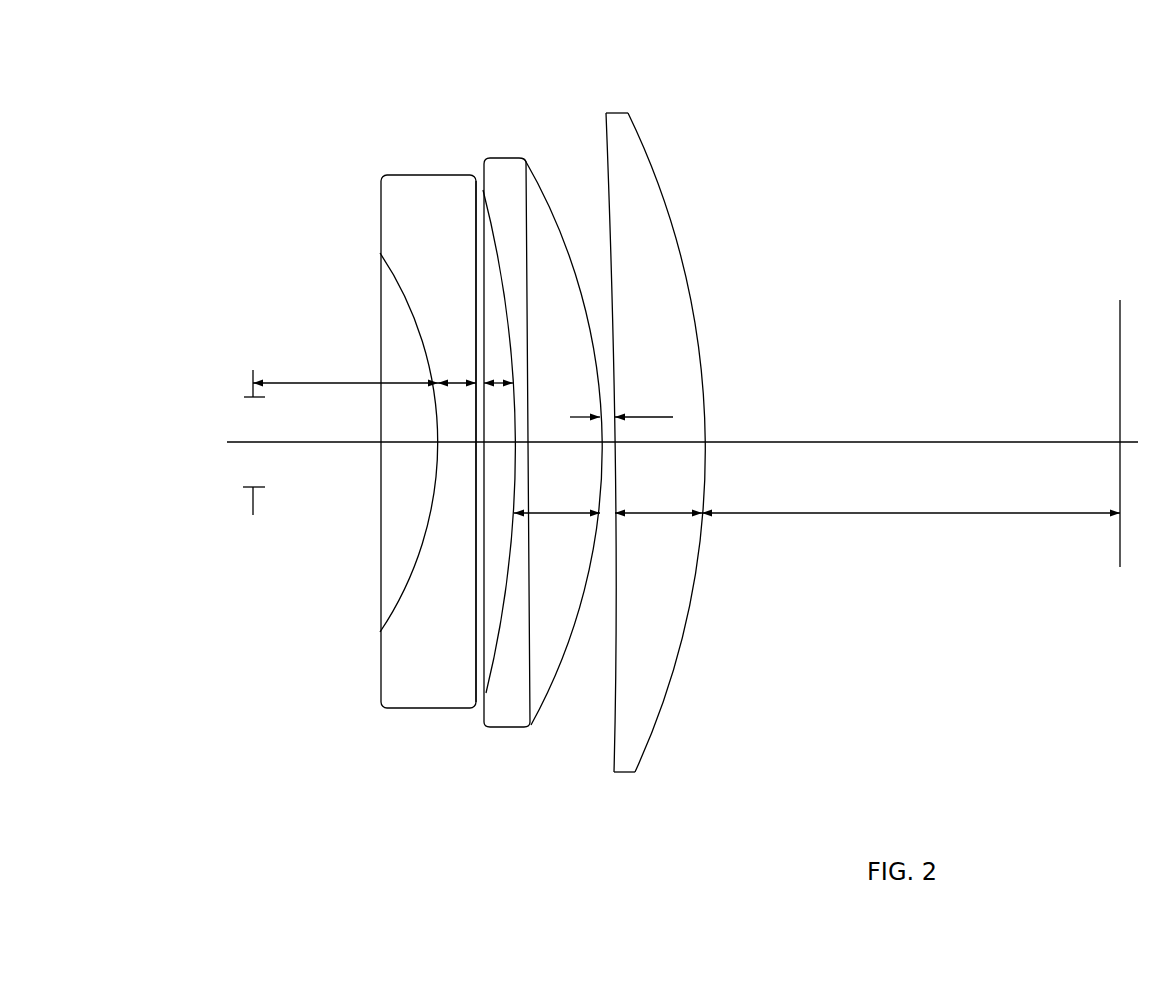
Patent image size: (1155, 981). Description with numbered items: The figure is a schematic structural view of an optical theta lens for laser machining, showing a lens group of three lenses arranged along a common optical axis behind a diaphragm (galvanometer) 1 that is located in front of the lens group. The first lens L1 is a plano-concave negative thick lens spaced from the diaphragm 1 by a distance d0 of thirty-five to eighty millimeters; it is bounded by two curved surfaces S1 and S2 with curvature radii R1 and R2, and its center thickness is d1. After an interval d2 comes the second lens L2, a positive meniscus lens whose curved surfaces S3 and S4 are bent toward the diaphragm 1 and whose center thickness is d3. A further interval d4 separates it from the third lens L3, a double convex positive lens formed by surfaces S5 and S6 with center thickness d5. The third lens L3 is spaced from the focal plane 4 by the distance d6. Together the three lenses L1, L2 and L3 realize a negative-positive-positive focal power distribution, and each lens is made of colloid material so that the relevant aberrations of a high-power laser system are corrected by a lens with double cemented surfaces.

The diaphragm 1 is at (222, 451).
The focal plane 4 is at (1043, 398).
The first lens L1 is at (408, 386).
The second lens L2 is at (488, 396).
The third lens L3 is at (654, 418).
The curved surface S1 is at (292, 544).
The curved surface S2 is at (420, 508).
The curved surface S3 is at (528, 512).
The curved surface S4 is at (585, 497).
The curved surface S5 is at (676, 474).
The curved surface S6 is at (730, 474).
The distance of the first lens from the diaphragm d0 is at (345, 371).
The center thickness of the first lens d1 is at (457, 371).
The interval between the first lens and the second lens d2 is at (498, 371).
The center thickness of the second lens d3 is at (557, 501).
The interval between the second lens and the third lens d4 is at (621, 405).
The center thickness of the third lens d5 is at (658, 501).
The distance of the third lens from the focal plane d6 is at (911, 501).